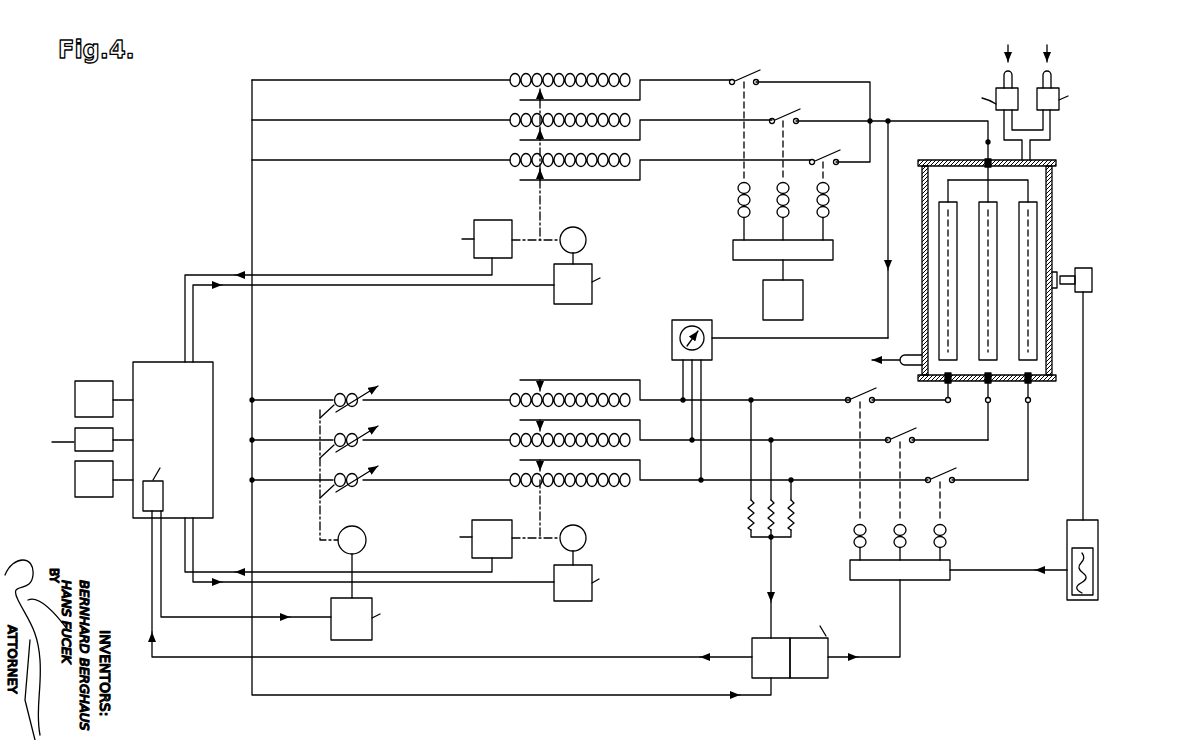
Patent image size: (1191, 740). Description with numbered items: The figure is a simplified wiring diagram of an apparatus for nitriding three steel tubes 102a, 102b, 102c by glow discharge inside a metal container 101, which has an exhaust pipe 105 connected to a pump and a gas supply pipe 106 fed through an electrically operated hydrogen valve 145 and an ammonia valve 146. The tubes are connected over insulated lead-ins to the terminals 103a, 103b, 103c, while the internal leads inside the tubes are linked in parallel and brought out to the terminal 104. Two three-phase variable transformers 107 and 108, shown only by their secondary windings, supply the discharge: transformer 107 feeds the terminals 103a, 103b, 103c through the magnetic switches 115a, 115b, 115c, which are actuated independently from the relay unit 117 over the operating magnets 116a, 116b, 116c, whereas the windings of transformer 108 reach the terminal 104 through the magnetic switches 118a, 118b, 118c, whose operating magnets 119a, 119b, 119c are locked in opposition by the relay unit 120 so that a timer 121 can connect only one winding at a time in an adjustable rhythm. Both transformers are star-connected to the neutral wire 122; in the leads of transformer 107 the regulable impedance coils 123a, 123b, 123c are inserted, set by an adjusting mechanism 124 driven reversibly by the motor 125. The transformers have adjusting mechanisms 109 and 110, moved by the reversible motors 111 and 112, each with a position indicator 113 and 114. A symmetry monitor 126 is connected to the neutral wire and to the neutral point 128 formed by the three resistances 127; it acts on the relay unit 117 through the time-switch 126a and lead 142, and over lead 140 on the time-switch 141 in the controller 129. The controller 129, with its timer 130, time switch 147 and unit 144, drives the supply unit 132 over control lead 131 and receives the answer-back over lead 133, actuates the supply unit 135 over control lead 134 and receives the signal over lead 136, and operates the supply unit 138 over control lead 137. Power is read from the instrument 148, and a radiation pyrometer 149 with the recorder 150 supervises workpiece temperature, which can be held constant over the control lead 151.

The metal container 101 is at (1053, 198).
The steel tube 102a is at (1038, 222).
The steel tube 102b is at (1000, 246).
The steel tube 102c is at (960, 268).
The terminal 103a is at (951, 404).
The terminal 103b is at (991, 404).
The terminal 103c is at (1031, 404).
The terminal 104 is at (986, 142).
The exhaust pipe 105 is at (910, 368).
The gas supply pipe 106 is at (1032, 158).
The three-phase variable transformer 107 is at (719, 421).
The three-phase variable transformer 108 is at (581, 73).
The adjusting mechanism 109 is at (542, 511).
The adjusting mechanism 110 is at (538, 203).
The reversible motor 111 is at (557, 548).
The reversible motor 112 is at (570, 228).
The position indicator 113 is at (455, 533).
The position indicator 114 is at (455, 234).
The magnetic switch 115a is at (866, 384).
The magnetic switch 115b is at (937, 428).
The magnetic switch 115c is at (977, 467).
The operating magnet 116a is at (852, 536).
The operating magnet 116b is at (900, 523).
The operating magnet 116c is at (948, 534).
The relay unit 117 is at (900, 570).
The magnetic switch 118a is at (746, 77).
The magnetic switch 118b is at (789, 117).
The magnetic switch 118c is at (829, 158).
The operating magnet 119a is at (738, 207).
The operating magnet 119b is at (776, 213).
The operating magnet 119c is at (830, 210).
The relay unit 120 is at (783, 260).
The timer 121 is at (762, 287).
The neutral wire 122 is at (253, 214).
The impedance coil 123a is at (381, 393).
The impedance coil 123b is at (381, 433).
The impedance coil 123c is at (381, 473).
The adjusting mechanism 124 is at (318, 517).
The motor 125 is at (338, 545).
The symmetry monitor 126 is at (727, 646).
The time-switch 126a is at (825, 645).
The resistances 127 is at (748, 513).
The neutral point 128 is at (766, 540).
The controller 129 is at (154, 361).
The timer 130 is at (95, 500).
The control lead 131 is at (456, 591).
The supply unit 132 is at (614, 583).
The lead 133 is at (444, 566).
The control lead 134 is at (384, 286).
The supply unit 135 is at (615, 284).
The lead 136 is at (339, 274).
The control lead 137 is at (216, 600).
The supply unit 138 is at (392, 619).
The lead 140 is at (480, 650).
The time-switch 141 is at (144, 533).
The lead 142 is at (900, 643).
The control unit 144 is at (96, 384).
The electrically operated valve 145 is at (984, 77).
The valve 146 is at (1070, 77).
The time switch 147 is at (75, 436).
The instrument 148 is at (672, 334).
The radiation pyrometer 149 is at (1096, 298).
The recorder 150 is at (1098, 530).
The control lead 151 is at (1002, 570).